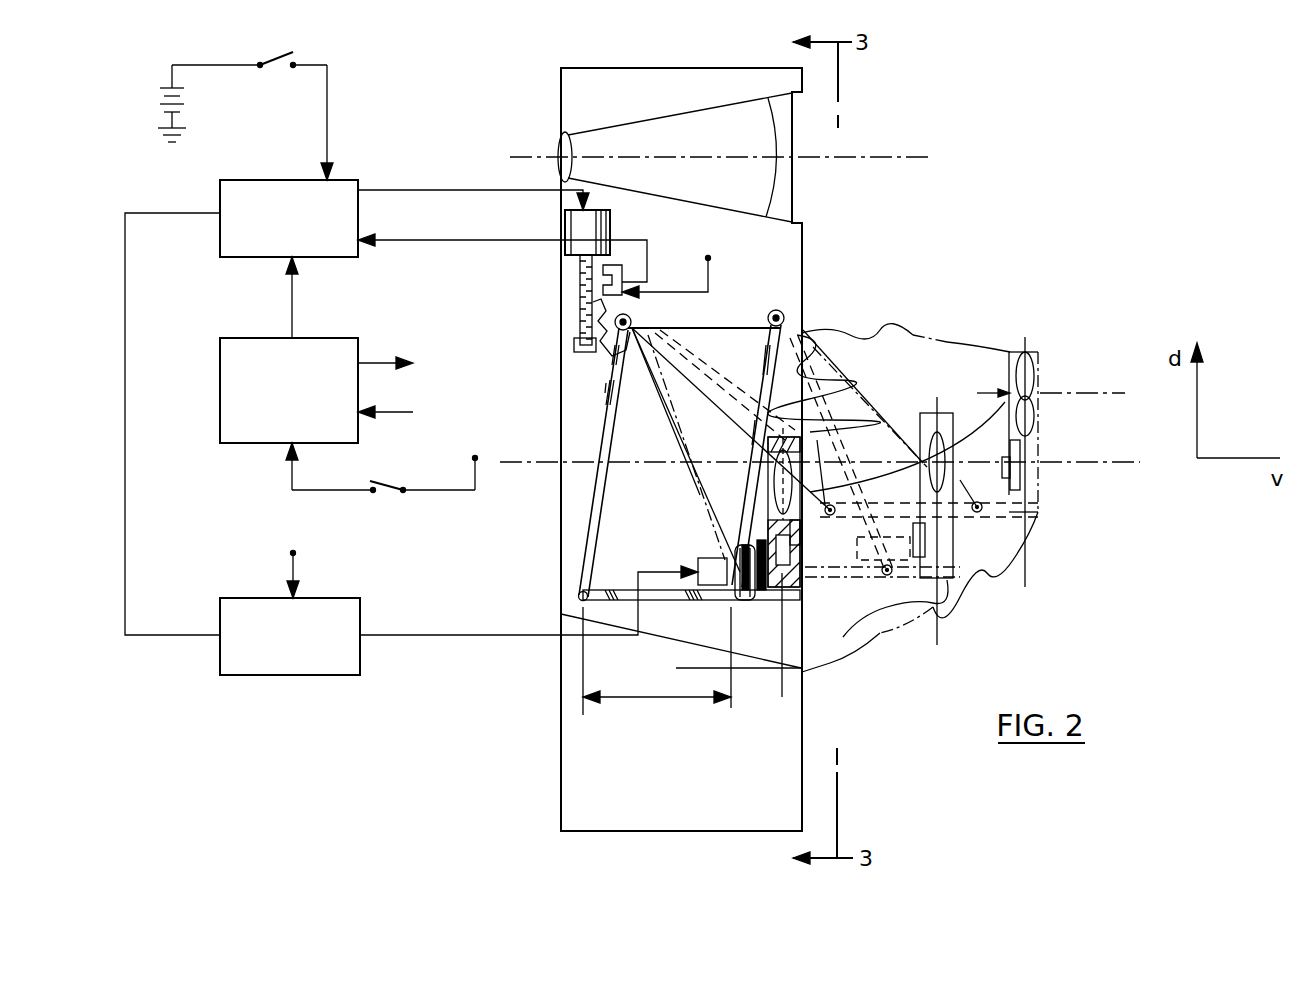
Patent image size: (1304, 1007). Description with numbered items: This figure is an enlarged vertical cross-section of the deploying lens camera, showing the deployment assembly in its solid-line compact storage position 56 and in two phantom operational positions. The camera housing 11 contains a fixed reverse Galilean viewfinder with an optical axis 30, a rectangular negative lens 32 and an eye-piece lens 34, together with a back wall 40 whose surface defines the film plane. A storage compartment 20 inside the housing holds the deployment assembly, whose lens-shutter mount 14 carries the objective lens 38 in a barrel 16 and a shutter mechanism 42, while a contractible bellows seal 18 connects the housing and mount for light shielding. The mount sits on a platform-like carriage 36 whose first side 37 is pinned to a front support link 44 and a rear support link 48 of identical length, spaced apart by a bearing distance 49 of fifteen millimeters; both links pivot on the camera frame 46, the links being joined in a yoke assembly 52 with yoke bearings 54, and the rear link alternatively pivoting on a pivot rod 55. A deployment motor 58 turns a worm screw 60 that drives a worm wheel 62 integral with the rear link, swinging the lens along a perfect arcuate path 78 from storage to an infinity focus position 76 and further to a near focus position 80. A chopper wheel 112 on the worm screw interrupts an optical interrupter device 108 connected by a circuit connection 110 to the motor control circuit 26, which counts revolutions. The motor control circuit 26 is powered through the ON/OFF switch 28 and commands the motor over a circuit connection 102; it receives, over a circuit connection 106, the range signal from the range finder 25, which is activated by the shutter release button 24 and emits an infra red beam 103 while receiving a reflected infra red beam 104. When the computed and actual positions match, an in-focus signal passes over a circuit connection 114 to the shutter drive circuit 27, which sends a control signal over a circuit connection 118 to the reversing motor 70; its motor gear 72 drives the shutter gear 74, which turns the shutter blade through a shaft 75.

The camera housing 11 is at (558, 730).
The lens-shutter mount 14 is at (803, 590).
The barrel 16 is at (793, 530).
The contractible bellows seal 18 is at (947, 343).
The storage compartment 20 is at (676, 668).
The shutter release button 24 is at (400, 498).
The range finder 25 is at (220, 425).
The motor control circuit 26 is at (282, 178).
The shutter drive circuit 27 is at (332, 598).
The ON/OFF switch 28 is at (250, 99).
The optical axis 30 is at (885, 160).
The rectangular negative lens 32 is at (797, 195).
The eye-piece lens 34 is at (560, 150).
The carriage 36 is at (620, 590).
The first side 37 is at (745, 600).
The objective lens 38 is at (767, 480).
The back wall 40 is at (610, 440).
The shutter mechanism 42 is at (680, 468).
The front support link 44 is at (768, 362).
The camera frame 46 is at (805, 256).
The rear support link 48 is at (605, 388).
The bearing distance 49 is at (640, 702).
The yoke assembly 52 is at (788, 315).
The yoke bearing 54 is at (762, 312).
The pivot rod 55 is at (648, 333).
The compact storage position 56 is at (782, 690).
The deployment motor 58 is at (610, 218).
The worm screw 60 is at (580, 300).
The worm wheel 62 is at (574, 345).
The reversing motor 70 is at (705, 558).
The motor gear 72 is at (757, 598).
The shutter gear 74 is at (733, 520).
The shaft 75 is at (793, 548).
The infinity focus position 76 is at (935, 633).
The arcuate path 78 is at (990, 426).
The near focus position 80 is at (1033, 572).
The circuit connection 102 is at (422, 188).
The infra red beam 103 is at (378, 363).
The reflected infra red beam 104 is at (390, 412).
The circuit connection 106 is at (290, 318).
The optical interrupter device 108 is at (625, 268).
The circuit connection 110 is at (440, 238).
The chopper wheel 112 is at (575, 282).
The circuit connection 114 is at (125, 400).
The circuit connection 118 is at (445, 633).